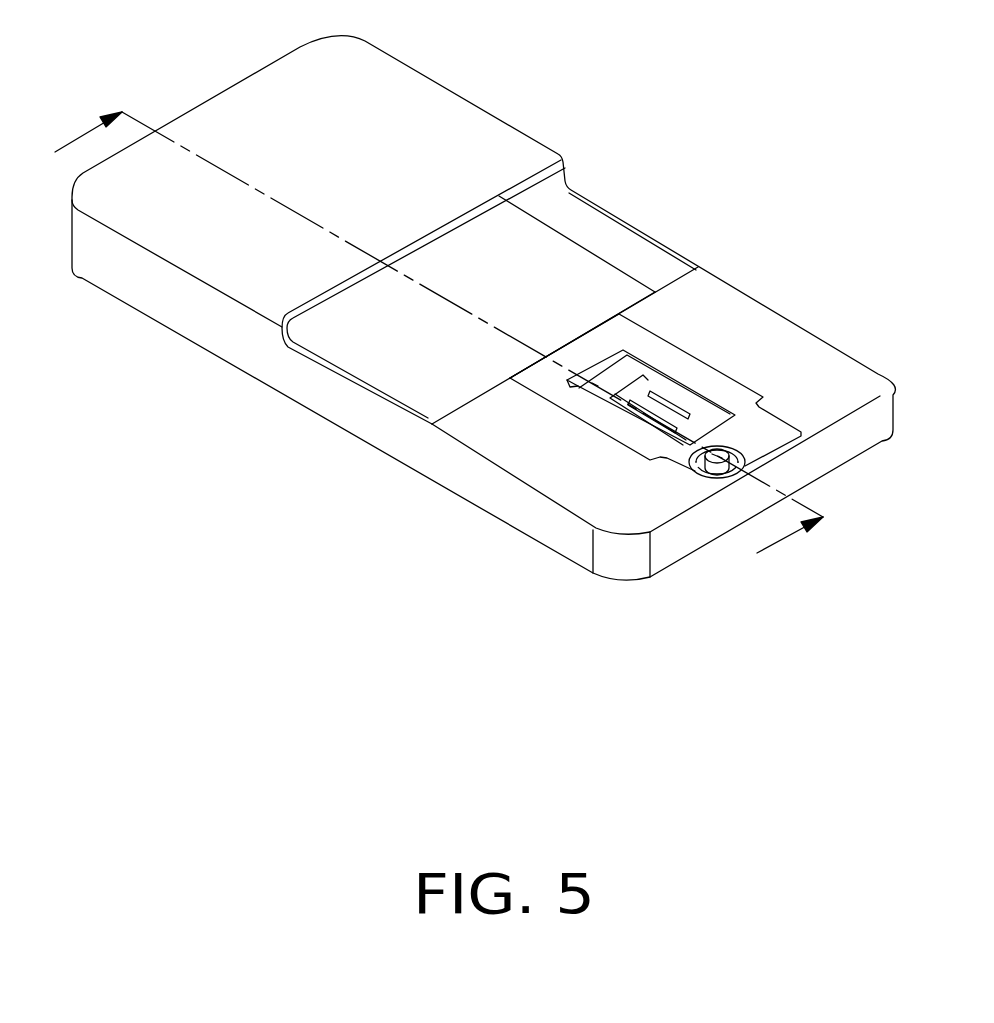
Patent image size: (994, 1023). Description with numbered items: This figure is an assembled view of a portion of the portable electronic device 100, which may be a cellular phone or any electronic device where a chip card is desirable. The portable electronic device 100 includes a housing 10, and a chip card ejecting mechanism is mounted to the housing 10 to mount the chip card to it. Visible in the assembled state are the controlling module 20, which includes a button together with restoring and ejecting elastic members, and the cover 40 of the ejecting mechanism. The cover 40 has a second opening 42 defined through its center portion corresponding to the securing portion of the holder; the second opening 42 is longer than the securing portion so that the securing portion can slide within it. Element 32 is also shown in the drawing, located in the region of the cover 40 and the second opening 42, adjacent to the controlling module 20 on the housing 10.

The portable electronic device 100 is at (469, 323).
The housing 10 is at (483, 487).
The controlling module 20 is at (717, 474).
The terminals 32 is at (685, 420).
The cover 40 is at (723, 315).
The second opening 42 is at (615, 370).